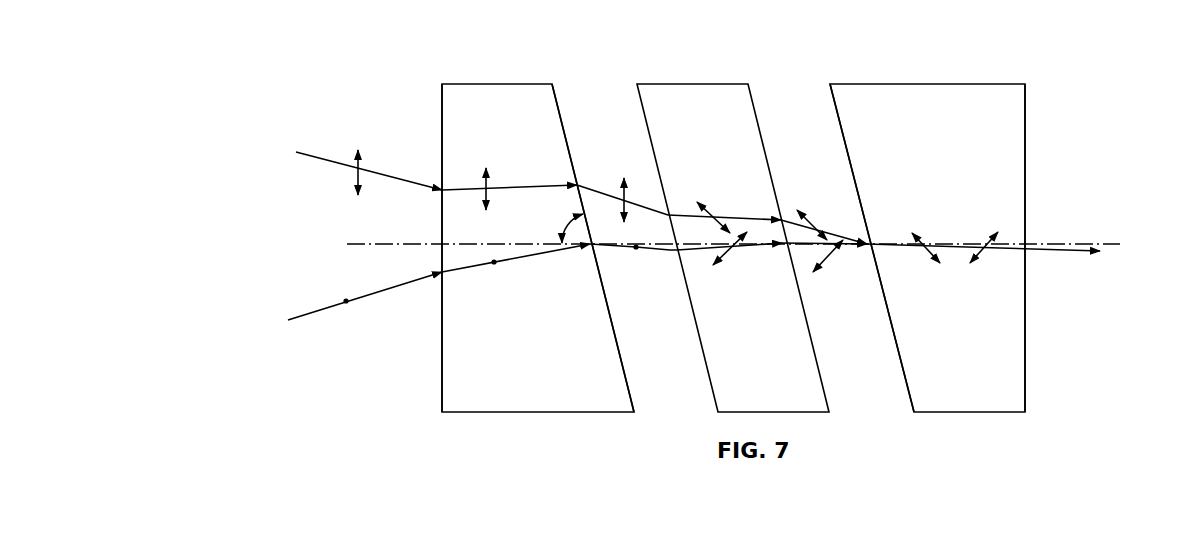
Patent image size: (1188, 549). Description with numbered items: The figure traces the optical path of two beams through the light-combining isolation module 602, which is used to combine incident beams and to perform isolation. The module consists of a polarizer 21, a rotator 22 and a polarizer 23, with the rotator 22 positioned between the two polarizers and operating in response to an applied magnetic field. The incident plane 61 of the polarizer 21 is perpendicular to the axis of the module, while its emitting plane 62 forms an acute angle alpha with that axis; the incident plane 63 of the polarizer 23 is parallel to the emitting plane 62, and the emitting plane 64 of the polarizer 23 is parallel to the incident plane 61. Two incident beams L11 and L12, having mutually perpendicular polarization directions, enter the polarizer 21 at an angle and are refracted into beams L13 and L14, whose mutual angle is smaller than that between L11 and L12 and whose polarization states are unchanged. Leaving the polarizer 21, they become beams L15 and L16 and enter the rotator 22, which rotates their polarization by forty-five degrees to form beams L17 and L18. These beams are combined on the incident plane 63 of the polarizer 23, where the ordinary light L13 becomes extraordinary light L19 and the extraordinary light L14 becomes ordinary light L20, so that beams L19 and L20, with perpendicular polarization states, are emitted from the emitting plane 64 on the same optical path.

The light-combining isolation module 602 is at (350, 47).
The polarizer 21 is at (507, 97).
The rotator 22 is at (700, 97).
The polarizer 23 is at (903, 93).
The incident plane 61 is at (442, 352).
The emitting plane 62 is at (612, 326).
The incident plane 63 is at (895, 337).
The emitting plane 64 is at (1025, 382).
The incident beam L11 is at (325, 160).
The incident beam L12 is at (309, 313).
The beam L13 is at (452, 187).
The beam L14 is at (467, 267).
The beam L15 is at (648, 203).
The beam L16 is at (646, 251).
The beam L17 is at (740, 218).
The beam L18 is at (745, 246).
The beam L19 is at (925, 232).
The beam L20 is at (985, 250).
The acute angle alpha is at (566, 228).